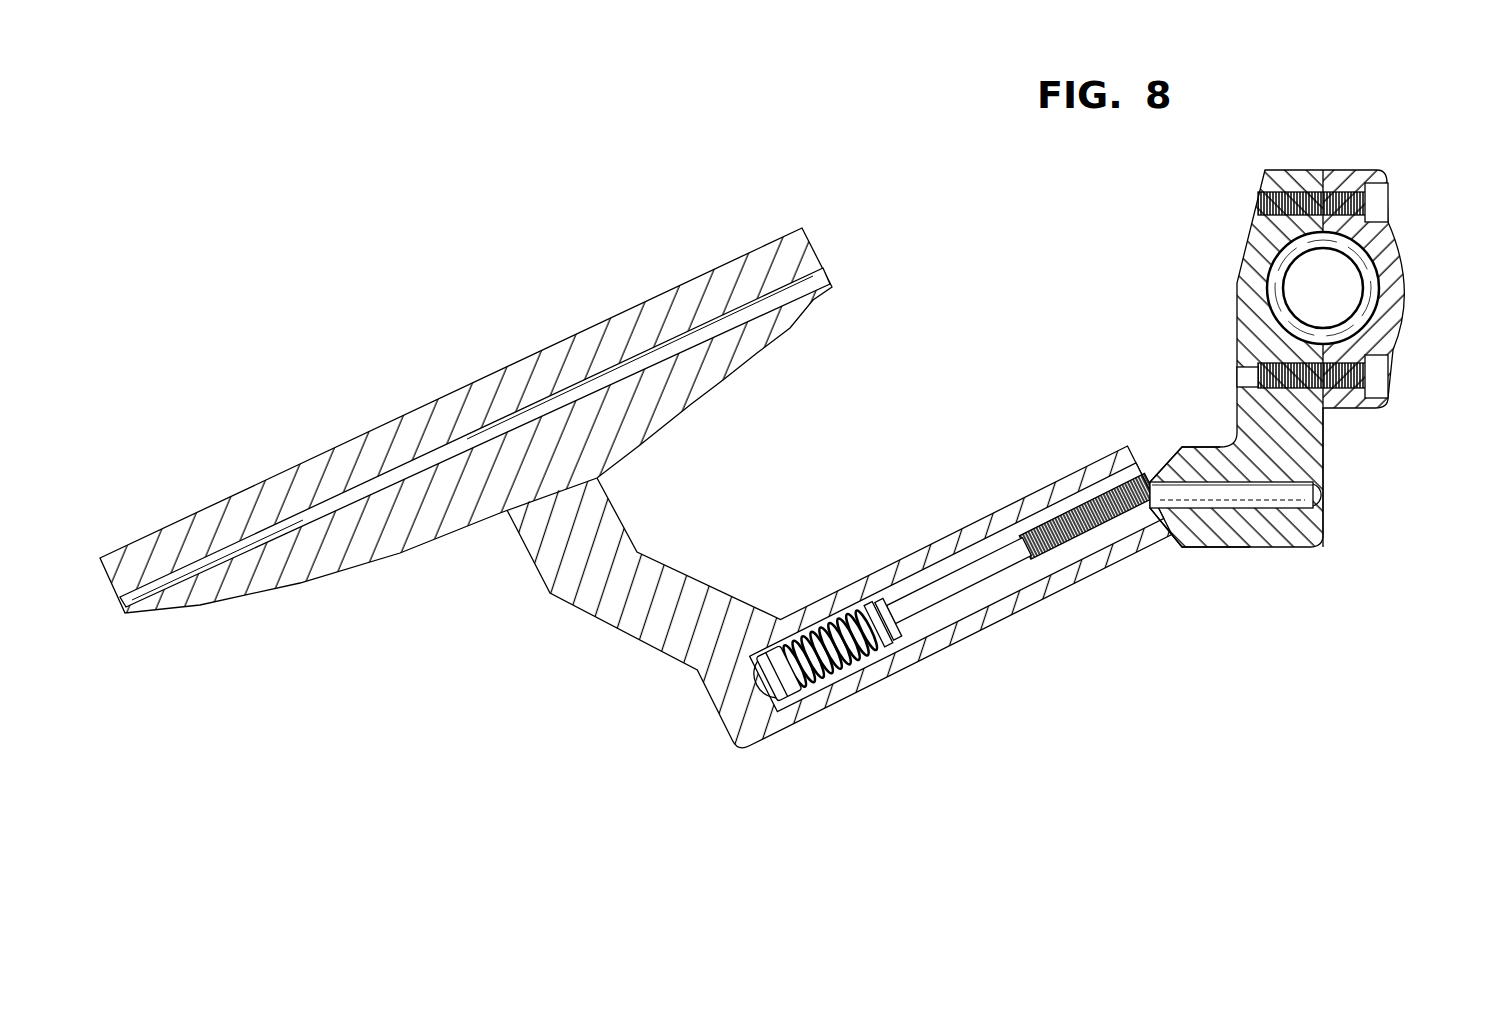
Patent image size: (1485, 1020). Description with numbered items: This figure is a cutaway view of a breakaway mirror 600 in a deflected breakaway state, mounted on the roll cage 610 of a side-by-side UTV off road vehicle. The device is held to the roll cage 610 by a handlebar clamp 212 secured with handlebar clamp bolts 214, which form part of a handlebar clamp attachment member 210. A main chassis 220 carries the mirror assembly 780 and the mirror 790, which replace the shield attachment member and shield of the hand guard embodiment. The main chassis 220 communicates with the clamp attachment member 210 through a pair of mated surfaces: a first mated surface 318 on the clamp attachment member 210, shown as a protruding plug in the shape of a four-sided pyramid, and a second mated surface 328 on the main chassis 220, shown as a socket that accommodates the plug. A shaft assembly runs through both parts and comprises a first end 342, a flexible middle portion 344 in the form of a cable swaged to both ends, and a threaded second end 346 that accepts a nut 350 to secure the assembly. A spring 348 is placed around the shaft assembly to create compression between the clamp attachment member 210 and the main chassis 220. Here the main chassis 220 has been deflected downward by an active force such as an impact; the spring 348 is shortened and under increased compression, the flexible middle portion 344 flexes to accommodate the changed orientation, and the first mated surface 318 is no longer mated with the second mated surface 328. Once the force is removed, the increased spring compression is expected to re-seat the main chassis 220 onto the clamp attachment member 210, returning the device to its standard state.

The mirror assembly 780 is at (803, 237).
The mirror 790 is at (826, 277).
The main chassis 220 is at (613, 528).
The nut 350 is at (742, 688).
The spring 348 is at (835, 620).
The second end 346 is at (953, 585).
The flexible middle portion 344 is at (1073, 510).
The first end 342 is at (1228, 493).
The second mated surface 328 is at (1137, 473).
The first mated surface 318 is at (1170, 540).
The handlebar clamp attachment member 210 is at (1292, 371).
The roll cage 610 is at (1388, 253).
The handlebar clamp 212 is at (1397, 248).
The handlebar clamp bolt 214 is at (1380, 381).
The breakaway mirror 600 is at (468, 648).